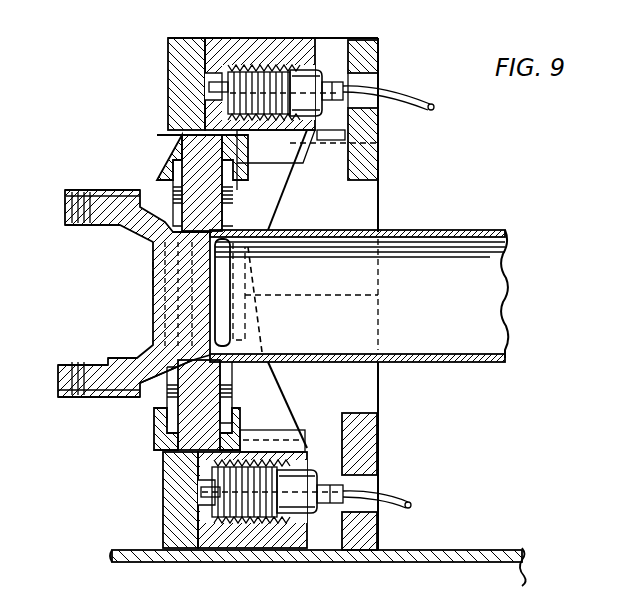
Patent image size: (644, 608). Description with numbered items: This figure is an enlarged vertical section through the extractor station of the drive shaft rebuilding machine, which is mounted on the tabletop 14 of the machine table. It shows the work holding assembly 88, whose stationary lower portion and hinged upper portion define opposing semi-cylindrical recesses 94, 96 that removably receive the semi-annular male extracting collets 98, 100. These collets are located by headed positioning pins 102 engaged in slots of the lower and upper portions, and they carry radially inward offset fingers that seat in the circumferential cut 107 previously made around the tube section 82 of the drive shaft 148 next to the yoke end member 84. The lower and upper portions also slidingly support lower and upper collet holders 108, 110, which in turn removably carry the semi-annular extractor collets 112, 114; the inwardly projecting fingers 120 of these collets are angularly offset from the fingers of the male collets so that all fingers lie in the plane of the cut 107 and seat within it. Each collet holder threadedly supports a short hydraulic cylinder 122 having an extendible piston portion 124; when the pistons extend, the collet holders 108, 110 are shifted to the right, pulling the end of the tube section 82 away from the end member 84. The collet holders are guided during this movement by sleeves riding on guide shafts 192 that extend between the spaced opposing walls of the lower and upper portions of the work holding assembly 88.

The tabletop 14 is at (436, 551).
The drive shaft center tube section 82 is at (440, 230).
The yoke end member 84 is at (153, 320).
The work holding assembly 88 is at (380, 66).
The lower semi-cylindrical recess 94 is at (168, 484).
The upper semi-cylindrical recess 96 is at (185, 122).
The semi-annular male extracting collet 98 is at (207, 400).
The semi-annular male extracting collet 100 is at (188, 203).
The headed positioning pin 102 is at (160, 150).
The circumferential cut 107 is at (153, 270).
The lower collet holder 108 is at (300, 412).
The upper collet holder 110 is at (310, 163).
The semi-annular extractor collet 112 is at (173, 388).
The semi-annular extractor collet 114 is at (237, 190).
The inwardly projecting finger 120 is at (268, 228).
The short hydraulic cylinder 122 is at (270, 62).
The extendible piston portion 124 is at (208, 86).
The drive shaft 148 is at (508, 288).
The guide shaft 192 is at (328, 143).